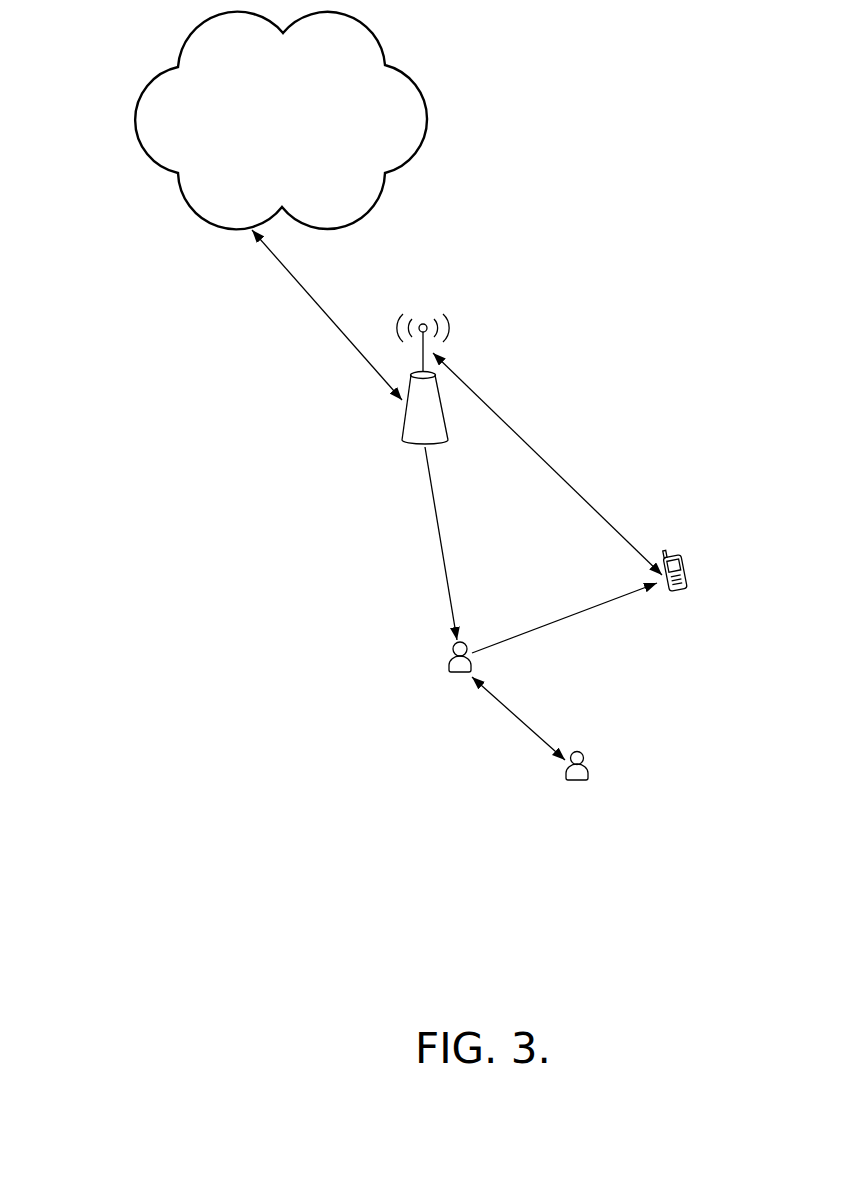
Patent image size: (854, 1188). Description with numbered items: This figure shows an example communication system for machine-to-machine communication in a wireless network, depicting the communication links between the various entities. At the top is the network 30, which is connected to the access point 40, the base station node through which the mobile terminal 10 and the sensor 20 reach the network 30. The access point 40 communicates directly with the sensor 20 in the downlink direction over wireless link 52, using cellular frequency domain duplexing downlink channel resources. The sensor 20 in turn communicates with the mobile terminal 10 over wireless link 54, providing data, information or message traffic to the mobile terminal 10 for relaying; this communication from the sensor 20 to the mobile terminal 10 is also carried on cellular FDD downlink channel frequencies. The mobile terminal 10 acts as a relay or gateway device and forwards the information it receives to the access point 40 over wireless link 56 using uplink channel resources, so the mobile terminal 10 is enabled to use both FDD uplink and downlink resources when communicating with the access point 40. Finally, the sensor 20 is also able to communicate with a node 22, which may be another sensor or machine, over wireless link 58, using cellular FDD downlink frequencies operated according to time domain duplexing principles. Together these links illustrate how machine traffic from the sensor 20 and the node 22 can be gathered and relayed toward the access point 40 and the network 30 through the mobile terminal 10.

The mobile terminal 10 is at (680, 592).
The sensor 20 is at (448, 667).
The node 22 is at (578, 782).
The network 30 is at (417, 78).
The access point 40 is at (410, 425).
The wireless link 52 is at (437, 520).
The wireless link 54 is at (547, 627).
The wireless link 56 is at (580, 498).
The wireless link 58 is at (508, 712).